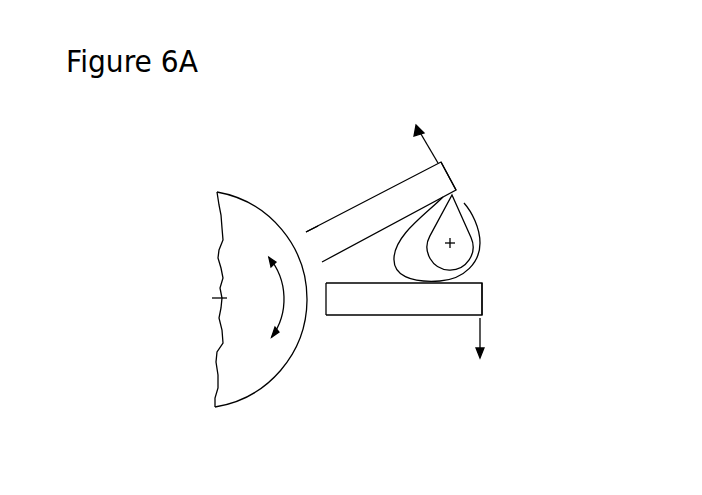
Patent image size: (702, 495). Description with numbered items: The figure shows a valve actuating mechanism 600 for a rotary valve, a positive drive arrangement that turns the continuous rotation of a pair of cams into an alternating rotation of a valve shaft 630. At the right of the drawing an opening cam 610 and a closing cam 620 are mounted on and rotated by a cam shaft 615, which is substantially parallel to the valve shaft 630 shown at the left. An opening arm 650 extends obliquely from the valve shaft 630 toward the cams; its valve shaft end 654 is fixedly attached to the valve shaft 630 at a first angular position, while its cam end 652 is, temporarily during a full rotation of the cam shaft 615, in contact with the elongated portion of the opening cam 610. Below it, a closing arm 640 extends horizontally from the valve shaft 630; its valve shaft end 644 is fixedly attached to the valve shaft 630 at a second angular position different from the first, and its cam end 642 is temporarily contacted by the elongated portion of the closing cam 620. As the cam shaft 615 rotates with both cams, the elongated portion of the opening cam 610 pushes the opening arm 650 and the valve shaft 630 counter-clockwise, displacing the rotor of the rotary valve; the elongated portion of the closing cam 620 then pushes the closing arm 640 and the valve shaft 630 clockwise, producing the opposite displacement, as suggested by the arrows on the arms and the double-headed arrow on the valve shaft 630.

The valve actuating mechanism 600 is at (292, 112).
The opening cam 610 is at (456, 206).
The cam shaft 615 is at (458, 237).
The closing cam 620 is at (481, 248).
The valve shaft 630 is at (232, 237).
The closing arm 640 is at (467, 305).
The cam end of closing arm 642 is at (472, 290).
The valve shaft end of closing arm 644 is at (331, 298).
The opening arm 650 is at (383, 193).
The cam end of opening arm 652 is at (448, 174).
The valve shaft end of opening arm 654 is at (320, 233).